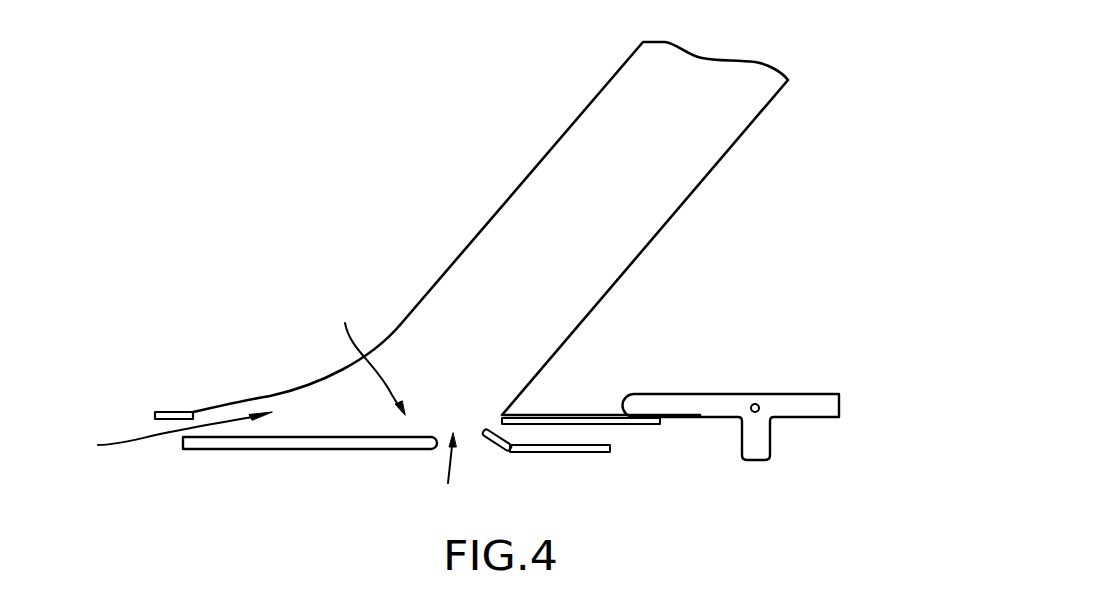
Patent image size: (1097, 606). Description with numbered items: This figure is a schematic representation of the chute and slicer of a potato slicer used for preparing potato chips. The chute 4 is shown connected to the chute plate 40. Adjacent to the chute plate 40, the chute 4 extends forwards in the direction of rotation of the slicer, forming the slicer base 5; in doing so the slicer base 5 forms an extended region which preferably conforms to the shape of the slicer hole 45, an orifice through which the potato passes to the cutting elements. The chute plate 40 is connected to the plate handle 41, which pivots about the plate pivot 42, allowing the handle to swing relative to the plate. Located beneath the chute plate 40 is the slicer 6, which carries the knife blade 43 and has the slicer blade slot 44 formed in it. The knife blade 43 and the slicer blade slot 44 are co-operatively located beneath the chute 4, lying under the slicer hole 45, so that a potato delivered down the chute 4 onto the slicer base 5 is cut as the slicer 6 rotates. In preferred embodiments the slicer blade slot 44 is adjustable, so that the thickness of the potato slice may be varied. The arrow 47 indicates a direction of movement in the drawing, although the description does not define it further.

The chute 4 is at (713, 168).
The slicer base 5 is at (243, 402).
The slicer 6 is at (317, 450).
The chute plate 40 is at (168, 411).
The plate handle 41 is at (792, 398).
The plate pivot 42 is at (755, 404).
The knife blade 43 is at (500, 447).
The slicer blade slot 44 is at (446, 476).
The slicer hole 45 is at (366, 355).
The feed direction arrow 47 is at (162, 438).